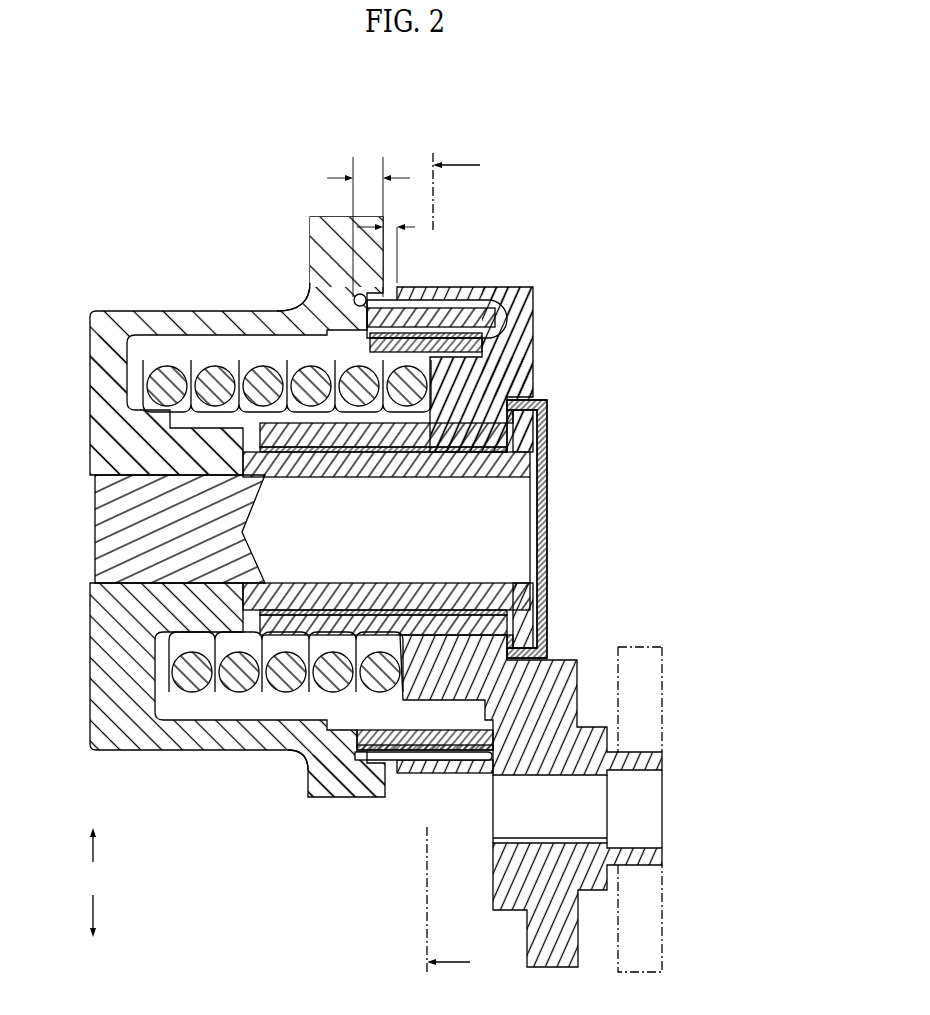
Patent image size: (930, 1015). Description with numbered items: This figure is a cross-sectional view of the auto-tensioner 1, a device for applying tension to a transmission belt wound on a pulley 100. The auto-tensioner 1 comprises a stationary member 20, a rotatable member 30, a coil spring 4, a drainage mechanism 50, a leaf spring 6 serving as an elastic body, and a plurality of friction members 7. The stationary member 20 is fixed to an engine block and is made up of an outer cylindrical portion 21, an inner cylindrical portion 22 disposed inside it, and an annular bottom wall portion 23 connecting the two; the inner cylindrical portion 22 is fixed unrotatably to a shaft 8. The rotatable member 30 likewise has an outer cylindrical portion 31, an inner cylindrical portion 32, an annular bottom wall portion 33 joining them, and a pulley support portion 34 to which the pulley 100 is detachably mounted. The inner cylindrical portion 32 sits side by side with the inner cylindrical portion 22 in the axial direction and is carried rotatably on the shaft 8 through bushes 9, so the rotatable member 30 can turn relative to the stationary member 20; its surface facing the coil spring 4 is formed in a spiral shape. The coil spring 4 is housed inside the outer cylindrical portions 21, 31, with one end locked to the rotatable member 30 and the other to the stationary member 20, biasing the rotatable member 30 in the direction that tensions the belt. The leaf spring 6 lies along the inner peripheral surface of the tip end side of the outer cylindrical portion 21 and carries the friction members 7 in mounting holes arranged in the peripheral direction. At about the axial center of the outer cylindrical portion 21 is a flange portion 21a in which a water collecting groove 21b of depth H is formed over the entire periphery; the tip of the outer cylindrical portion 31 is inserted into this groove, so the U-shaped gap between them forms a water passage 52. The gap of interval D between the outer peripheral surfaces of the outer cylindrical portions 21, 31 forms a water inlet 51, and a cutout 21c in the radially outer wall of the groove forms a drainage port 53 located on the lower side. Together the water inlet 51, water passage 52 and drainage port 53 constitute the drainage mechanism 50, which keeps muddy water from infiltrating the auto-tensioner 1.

The auto-tensioner 1 is at (116, 162).
The coil spring 4 is at (238, 673).
The leaf spring 6 is at (435, 340).
The friction members 7 is at (481, 288).
The shaft 8 is at (107, 527).
The bushes 9 is at (325, 477).
The stationary member 20 is at (220, 247).
The outer cylindrical portion 21 is at (217, 323).
The flange portion 21a is at (322, 228).
The water collecting groove 21b is at (312, 258).
The cutout 21c is at (370, 793).
The inner cylindrical portion 22 is at (212, 450).
The annular bottom wall portion 23 is at (103, 373).
The rotatable member 30 is at (652, 272).
The outer cylindrical portion 31 is at (480, 284).
The inner cylindrical portion 32 is at (480, 393).
The annular bottom wall portion 33 is at (517, 355).
The pulley support portion 34 is at (555, 662).
The drainage mechanism 50 is at (345, 826).
The water inlet 51 is at (392, 290).
The water passage 52 is at (353, 303).
The drainage port 53 is at (376, 781).
The pulley 100 is at (640, 660).